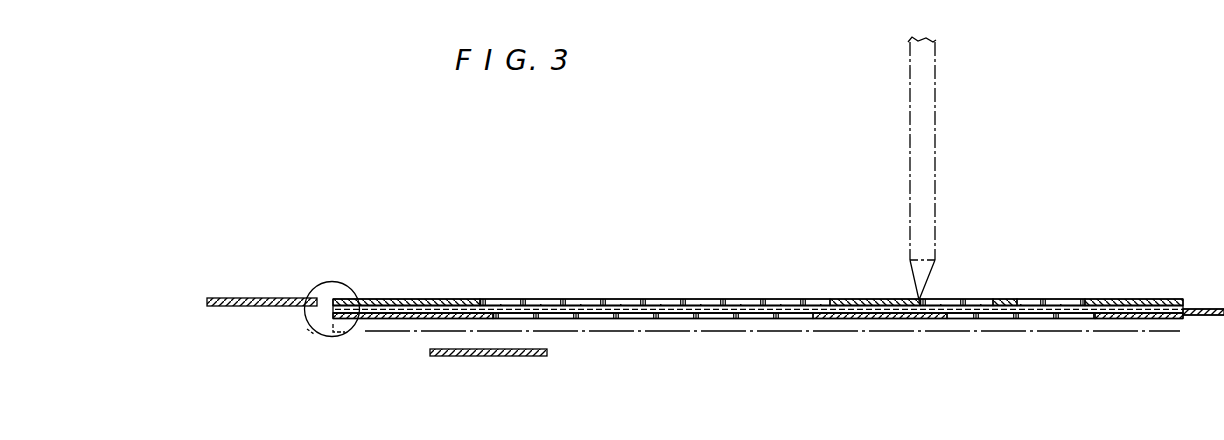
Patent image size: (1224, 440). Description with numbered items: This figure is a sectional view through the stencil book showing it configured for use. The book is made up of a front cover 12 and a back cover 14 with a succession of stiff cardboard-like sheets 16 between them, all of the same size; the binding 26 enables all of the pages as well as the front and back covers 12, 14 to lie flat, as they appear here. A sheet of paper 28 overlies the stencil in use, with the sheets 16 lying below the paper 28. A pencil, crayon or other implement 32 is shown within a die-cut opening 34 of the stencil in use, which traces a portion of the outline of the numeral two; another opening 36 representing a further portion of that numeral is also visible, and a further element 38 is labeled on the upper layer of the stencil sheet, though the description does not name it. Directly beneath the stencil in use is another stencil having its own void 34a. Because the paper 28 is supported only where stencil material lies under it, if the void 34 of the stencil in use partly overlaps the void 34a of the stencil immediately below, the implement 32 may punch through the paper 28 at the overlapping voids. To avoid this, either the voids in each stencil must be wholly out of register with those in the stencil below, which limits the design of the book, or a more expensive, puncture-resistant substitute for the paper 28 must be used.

The front cover 12 is at (253, 307).
The back cover 14 is at (462, 357).
The sheets 16 is at (1183, 321).
The binding 26 is at (338, 283).
The paper 28 is at (1203, 308).
The pencil or crayon 32 is at (938, 232).
The die-cut opening 34 is at (972, 303).
The void of the stencil immediately therebelow 34a is at (985, 320).
The opening 36 is at (1052, 302).
The upper layer 38 is at (823, 303).